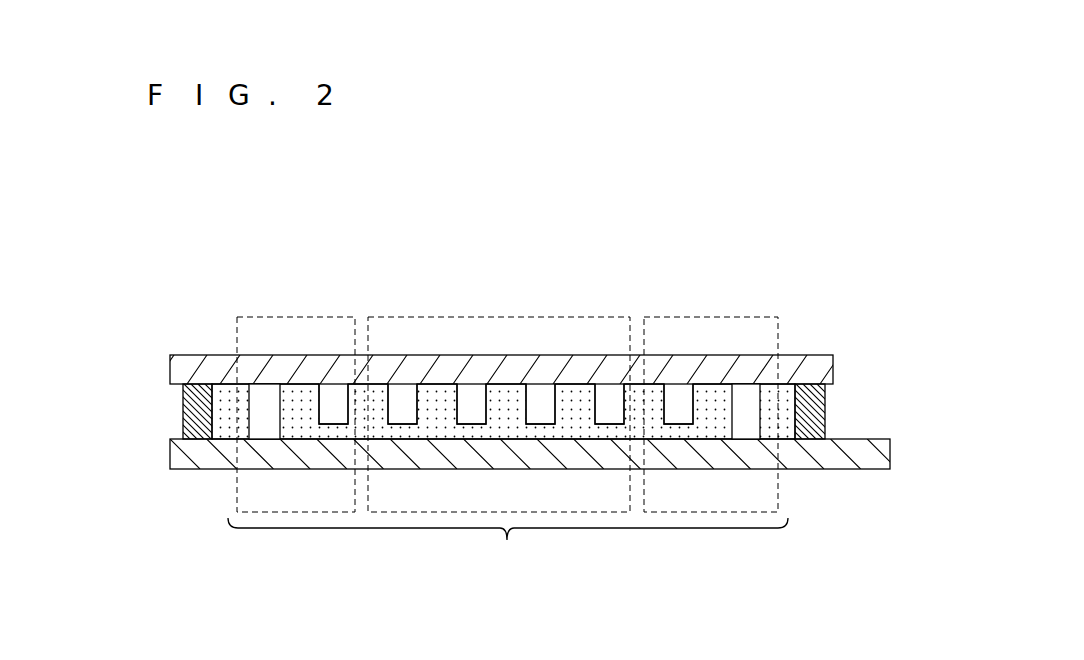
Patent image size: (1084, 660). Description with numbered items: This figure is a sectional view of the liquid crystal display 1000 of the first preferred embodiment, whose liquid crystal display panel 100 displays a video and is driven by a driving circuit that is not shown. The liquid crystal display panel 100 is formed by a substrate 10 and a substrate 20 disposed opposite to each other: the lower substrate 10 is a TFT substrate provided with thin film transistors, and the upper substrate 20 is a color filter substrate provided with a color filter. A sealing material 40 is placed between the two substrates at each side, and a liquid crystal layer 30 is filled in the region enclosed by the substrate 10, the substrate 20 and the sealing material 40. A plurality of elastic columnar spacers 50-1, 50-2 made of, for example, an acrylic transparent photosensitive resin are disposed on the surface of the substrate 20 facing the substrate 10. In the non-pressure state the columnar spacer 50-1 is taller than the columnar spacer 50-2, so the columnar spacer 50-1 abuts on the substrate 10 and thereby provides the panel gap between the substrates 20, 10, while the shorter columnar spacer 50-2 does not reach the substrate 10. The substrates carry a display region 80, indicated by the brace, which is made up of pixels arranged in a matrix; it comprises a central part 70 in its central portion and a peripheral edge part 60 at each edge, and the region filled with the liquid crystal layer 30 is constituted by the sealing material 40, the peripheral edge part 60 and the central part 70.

The substrate 10 is at (837, 448).
The substrate 20 is at (385, 373).
The liquid crystal layer 30 is at (428, 408).
The sealing material 40 is at (195, 402).
The columnar spacer 50-1 is at (747, 392).
The columnar spacer 50-2 is at (540, 390).
The peripheral edge part 60 is at (237, 487).
The central part 70 is at (440, 513).
The display region 80 is at (508, 544).
The liquid crystal display panel 100 is at (806, 355).
The liquid crystal display 1000 is at (852, 181).